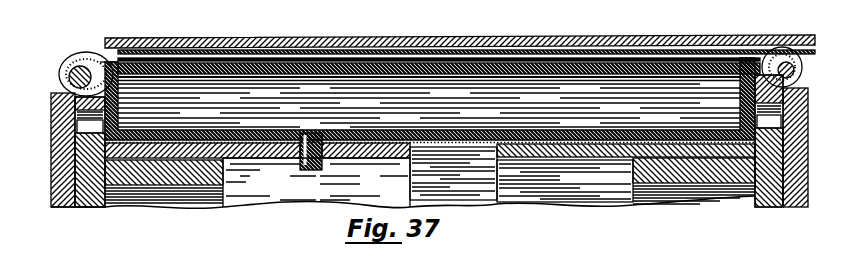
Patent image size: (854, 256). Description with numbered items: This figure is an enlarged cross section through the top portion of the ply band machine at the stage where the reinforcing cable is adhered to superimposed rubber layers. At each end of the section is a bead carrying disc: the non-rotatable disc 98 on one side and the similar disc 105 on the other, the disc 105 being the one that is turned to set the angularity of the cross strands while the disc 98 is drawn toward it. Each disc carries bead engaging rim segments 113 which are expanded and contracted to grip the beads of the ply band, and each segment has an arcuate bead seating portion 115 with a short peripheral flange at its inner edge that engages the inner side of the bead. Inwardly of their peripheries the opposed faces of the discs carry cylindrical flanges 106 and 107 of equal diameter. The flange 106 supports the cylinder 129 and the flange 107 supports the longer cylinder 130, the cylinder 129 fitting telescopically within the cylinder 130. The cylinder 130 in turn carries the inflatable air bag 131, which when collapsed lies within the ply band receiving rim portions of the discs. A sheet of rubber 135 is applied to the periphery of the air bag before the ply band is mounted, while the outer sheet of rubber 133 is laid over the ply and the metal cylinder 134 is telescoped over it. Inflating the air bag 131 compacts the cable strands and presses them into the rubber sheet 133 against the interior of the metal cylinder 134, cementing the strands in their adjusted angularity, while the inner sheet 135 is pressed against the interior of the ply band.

The disc 98 is at (764, 190).
The disc 105 is at (100, 207).
The cylindrical flange 106 is at (673, 180).
The cylindrical flange 107 is at (269, 182).
The bead engaging rim segment 113 is at (66, 207).
The arcuate bead seating portion 115 is at (50, 92).
The cylinder 129 is at (565, 181).
The cylinder 130 is at (363, 182).
The inflatable air bag 131 is at (547, 131).
The sheet of rubber 133 is at (778, 40).
The metal cylinder 134 is at (710, 36).
The sheet of rubber 135 is at (375, 83).